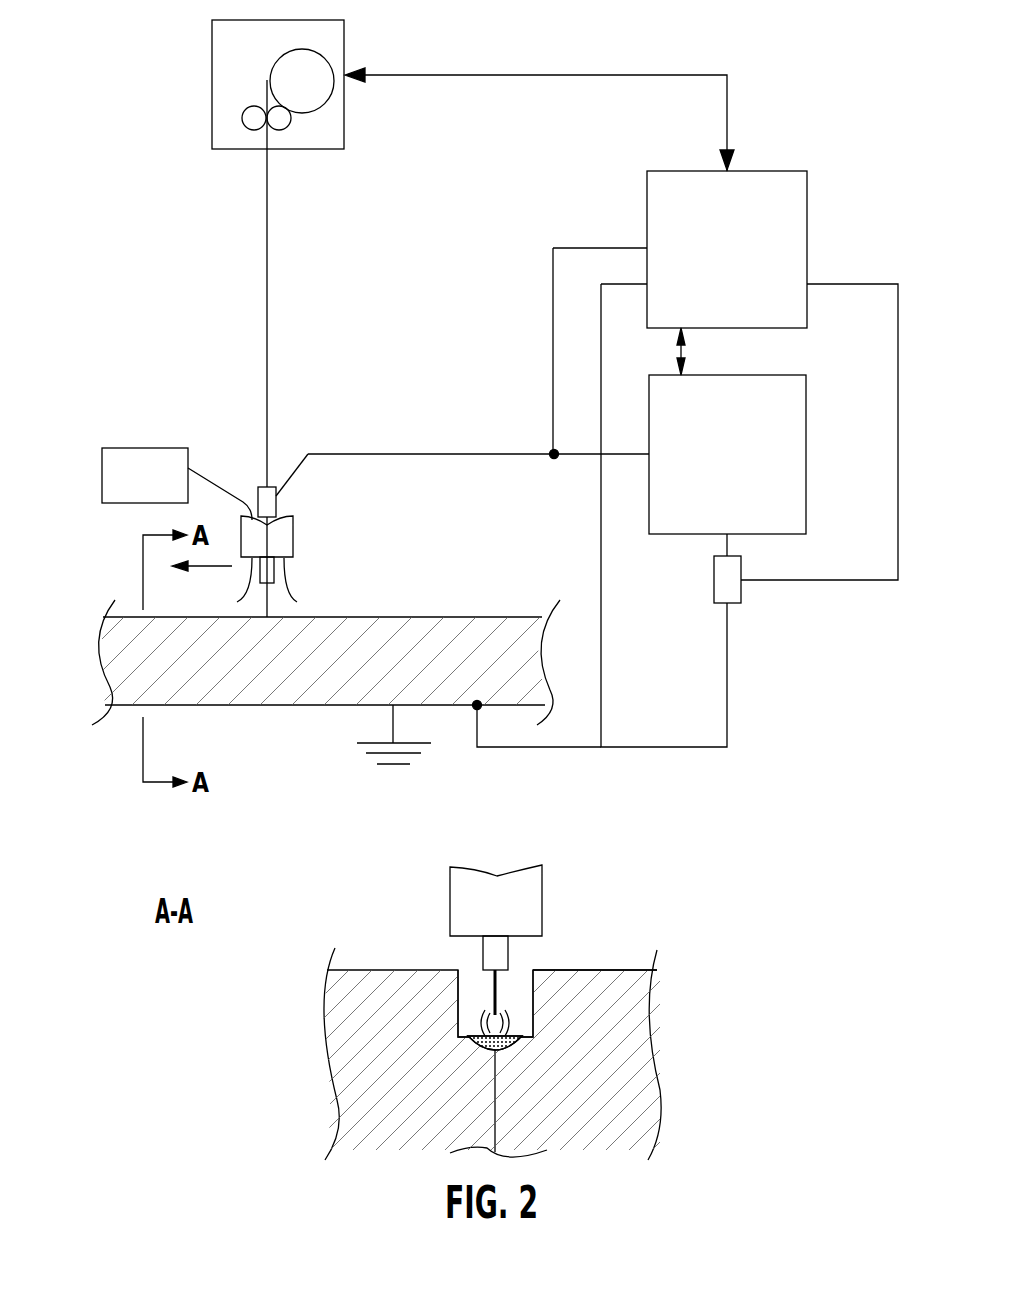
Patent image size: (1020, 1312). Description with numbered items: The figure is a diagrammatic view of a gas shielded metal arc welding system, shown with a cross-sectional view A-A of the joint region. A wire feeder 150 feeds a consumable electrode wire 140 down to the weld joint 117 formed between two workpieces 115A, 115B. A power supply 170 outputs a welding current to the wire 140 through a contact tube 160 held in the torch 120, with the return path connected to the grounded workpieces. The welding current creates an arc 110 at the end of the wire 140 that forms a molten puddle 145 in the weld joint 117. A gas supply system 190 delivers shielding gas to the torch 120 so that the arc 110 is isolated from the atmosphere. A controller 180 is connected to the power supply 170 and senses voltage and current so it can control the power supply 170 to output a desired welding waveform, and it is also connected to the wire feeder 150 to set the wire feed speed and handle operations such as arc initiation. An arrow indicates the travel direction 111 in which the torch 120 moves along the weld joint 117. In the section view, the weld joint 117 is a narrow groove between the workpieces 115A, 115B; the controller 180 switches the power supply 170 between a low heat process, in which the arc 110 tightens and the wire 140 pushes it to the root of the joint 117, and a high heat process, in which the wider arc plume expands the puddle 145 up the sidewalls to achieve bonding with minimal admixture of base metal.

The wire feeder 150 is at (344, 37).
The controller 180 is at (807, 205).
The power supply 170 is at (806, 418).
The consumable electrode 140 is at (267, 399).
The gas supply system 190 is at (102, 490).
The contact tube 160 is at (276, 507).
The torch 120 is at (293, 536).
The travel direction 111 is at (202, 582).
The workpiece 115A is at (265, 705).
The workpiece 115B is at (627, 1015).
The weld joint 117 is at (468, 968).
The arc 110 is at (508, 1025).
The molten puddle 145 is at (513, 1047).